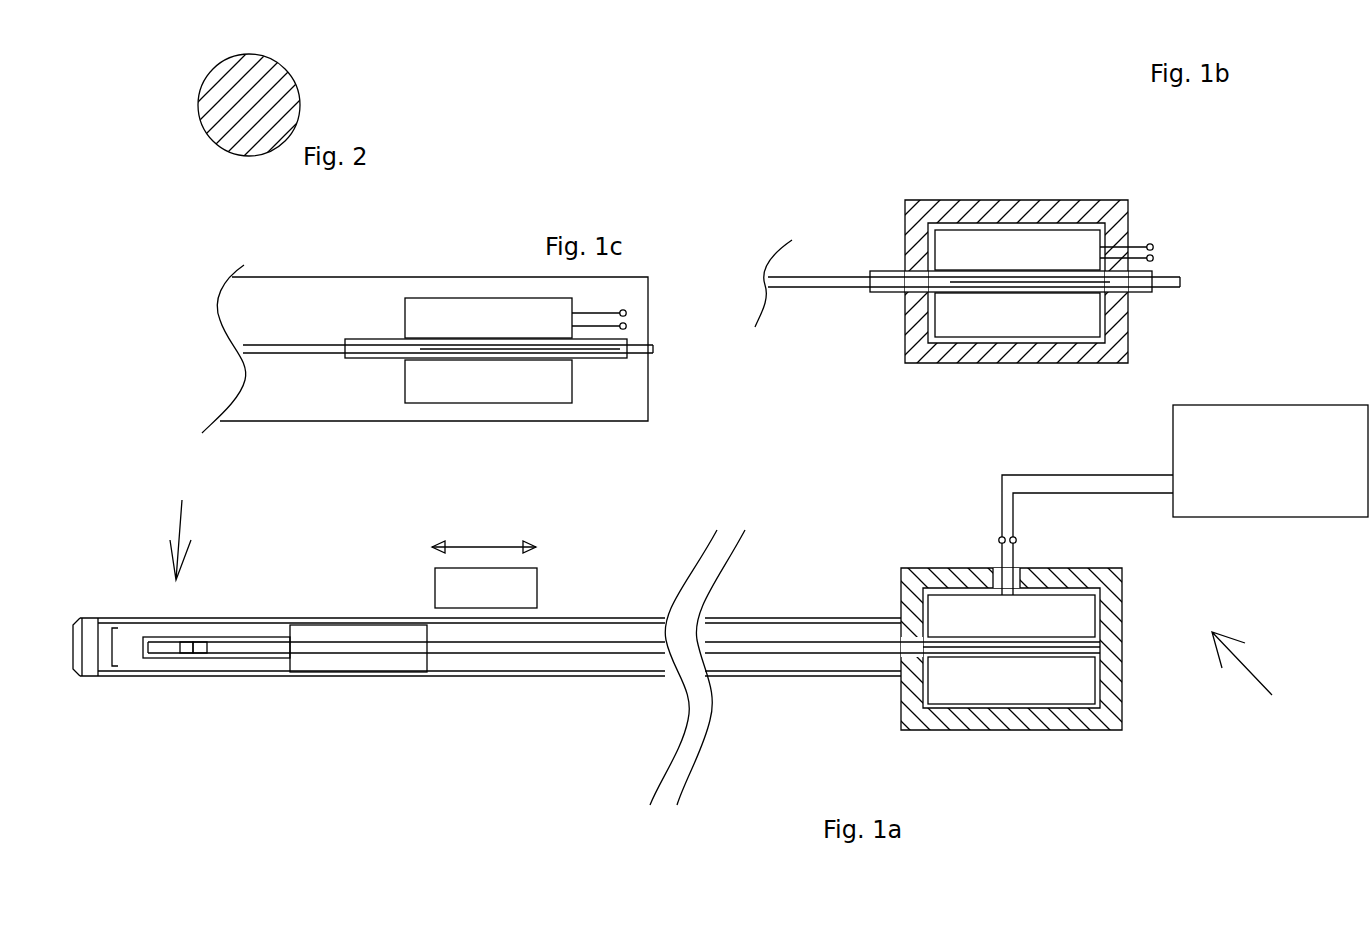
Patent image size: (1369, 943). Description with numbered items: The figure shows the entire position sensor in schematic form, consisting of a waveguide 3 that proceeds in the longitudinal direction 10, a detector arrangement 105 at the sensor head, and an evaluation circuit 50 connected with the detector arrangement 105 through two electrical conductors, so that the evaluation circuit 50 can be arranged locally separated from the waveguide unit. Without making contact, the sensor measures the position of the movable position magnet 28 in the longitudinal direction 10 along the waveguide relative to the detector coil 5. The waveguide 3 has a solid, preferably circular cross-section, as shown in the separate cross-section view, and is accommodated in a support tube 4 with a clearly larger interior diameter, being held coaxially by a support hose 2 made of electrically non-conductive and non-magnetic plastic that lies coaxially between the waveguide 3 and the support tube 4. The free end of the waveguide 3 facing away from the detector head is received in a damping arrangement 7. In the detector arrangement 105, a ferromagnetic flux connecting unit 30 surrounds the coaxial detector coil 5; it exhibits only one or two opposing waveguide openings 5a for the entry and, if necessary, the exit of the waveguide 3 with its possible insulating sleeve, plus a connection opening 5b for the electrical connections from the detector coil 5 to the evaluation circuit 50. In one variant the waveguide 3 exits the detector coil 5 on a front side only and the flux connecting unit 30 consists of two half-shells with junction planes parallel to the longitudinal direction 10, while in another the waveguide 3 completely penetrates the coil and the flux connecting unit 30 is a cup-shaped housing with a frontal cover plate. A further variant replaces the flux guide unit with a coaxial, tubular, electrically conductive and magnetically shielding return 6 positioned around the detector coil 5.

In FIG. 1a, the support hose 2 is at (600, 630).
In FIG. 1a, the waveguide 3 is at (790, 643).
In FIG. 1b, the waveguide 3 is at (795, 283).
In FIG. 1c, the waveguide 3 is at (268, 348).
In FIG. 2, the waveguide 3 is at (288, 118).
In FIG. 1a, the support tube 4 is at (655, 618).
In FIG. 1a, the detector coil 5 is at (1011, 649).
In FIG. 1b, the detector coil 5 is at (1017, 283).
In FIG. 1c, the detector coil 5 is at (486, 350).
In FIG. 1a, the waveguide opening 5a is at (895, 672).
In FIG. 1b, the waveguide opening 5a is at (905, 268).
In FIG. 1a, the connection opening 5b is at (1020, 578).
In FIG. 1b, the connection opening 5b is at (1128, 235).
In FIG. 1c, the return 6 is at (462, 277).
In FIG. 1a, the damping arrangement 7 is at (180, 524).
In FIG. 1a, the longitudinal direction 10 is at (478, 547).
In FIG. 1a, the position magnet 28 is at (486, 588).
In FIG. 1a, the flux connecting unit 30 is at (930, 578).
In FIG. 1b, the flux connecting unit 30 is at (992, 200).
In FIG. 1a, the evaluation circuit 50 is at (1270, 461).
In FIG. 1a, the detector arrangement 105 is at (1259, 684).